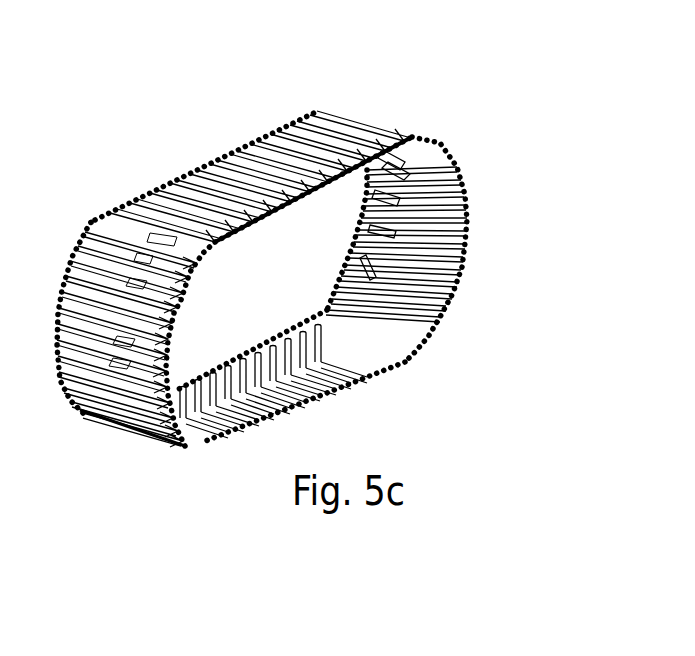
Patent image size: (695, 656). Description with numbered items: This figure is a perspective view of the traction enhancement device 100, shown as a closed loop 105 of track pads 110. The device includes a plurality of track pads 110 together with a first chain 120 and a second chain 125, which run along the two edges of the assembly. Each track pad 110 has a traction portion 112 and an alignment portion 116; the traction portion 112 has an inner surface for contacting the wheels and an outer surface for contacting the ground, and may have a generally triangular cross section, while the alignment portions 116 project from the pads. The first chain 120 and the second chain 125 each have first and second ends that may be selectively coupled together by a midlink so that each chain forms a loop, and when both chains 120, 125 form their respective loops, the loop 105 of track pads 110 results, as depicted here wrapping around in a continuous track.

The traction enhancement device 100 is at (207, 100).
The loop 105 is at (403, 98).
The track pad 110 is at (135, 432).
The traction portion 112 is at (453, 297).
The alignment portion 116 is at (400, 258).
The first chain 120 is at (415, 368).
The second chain 125 is at (82, 226).